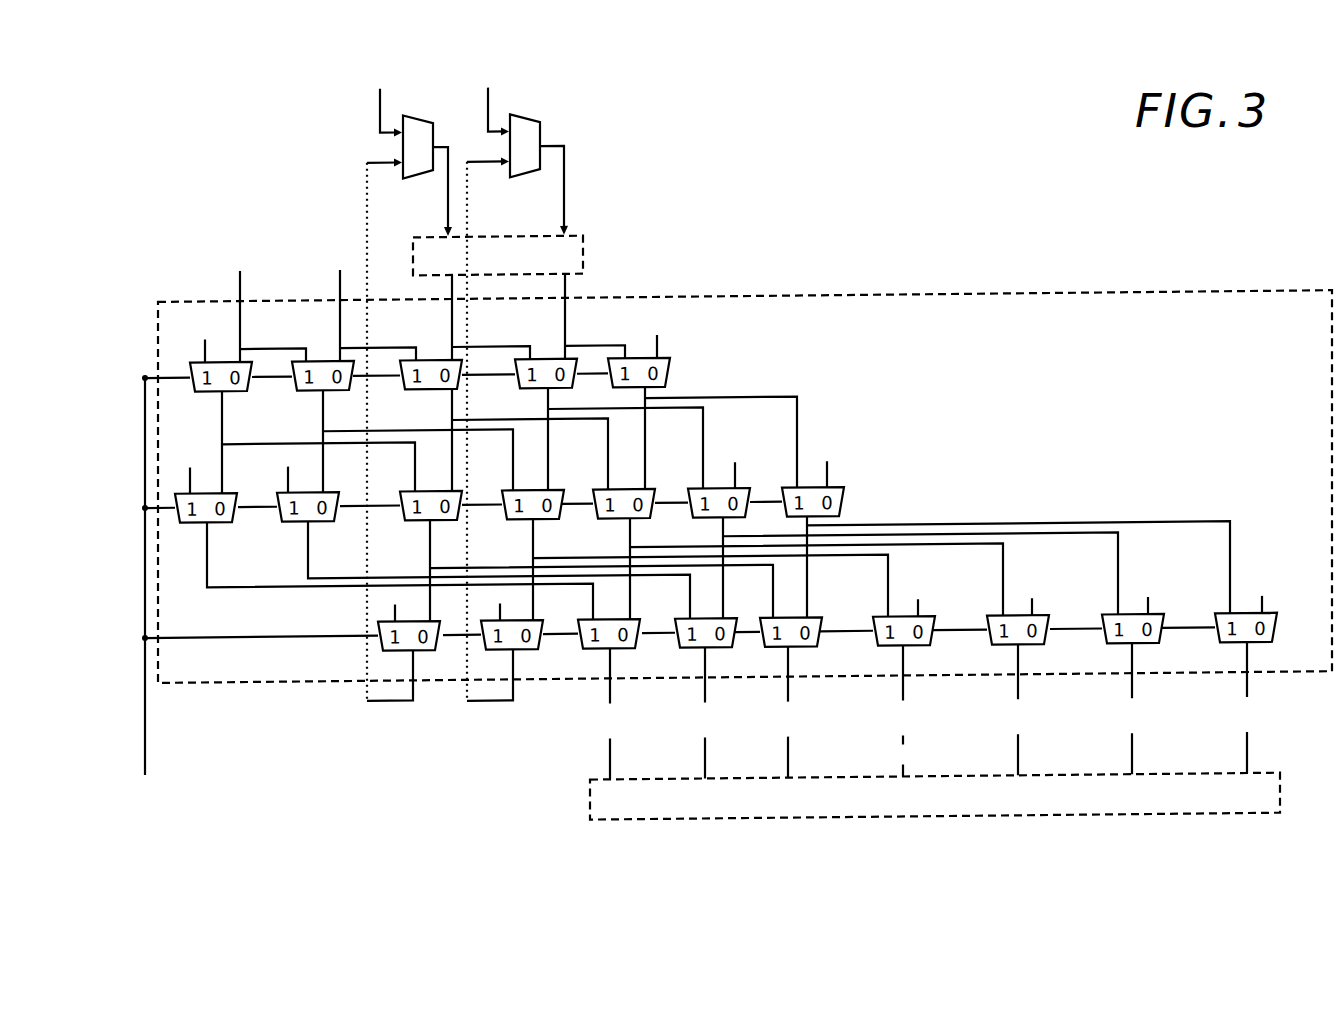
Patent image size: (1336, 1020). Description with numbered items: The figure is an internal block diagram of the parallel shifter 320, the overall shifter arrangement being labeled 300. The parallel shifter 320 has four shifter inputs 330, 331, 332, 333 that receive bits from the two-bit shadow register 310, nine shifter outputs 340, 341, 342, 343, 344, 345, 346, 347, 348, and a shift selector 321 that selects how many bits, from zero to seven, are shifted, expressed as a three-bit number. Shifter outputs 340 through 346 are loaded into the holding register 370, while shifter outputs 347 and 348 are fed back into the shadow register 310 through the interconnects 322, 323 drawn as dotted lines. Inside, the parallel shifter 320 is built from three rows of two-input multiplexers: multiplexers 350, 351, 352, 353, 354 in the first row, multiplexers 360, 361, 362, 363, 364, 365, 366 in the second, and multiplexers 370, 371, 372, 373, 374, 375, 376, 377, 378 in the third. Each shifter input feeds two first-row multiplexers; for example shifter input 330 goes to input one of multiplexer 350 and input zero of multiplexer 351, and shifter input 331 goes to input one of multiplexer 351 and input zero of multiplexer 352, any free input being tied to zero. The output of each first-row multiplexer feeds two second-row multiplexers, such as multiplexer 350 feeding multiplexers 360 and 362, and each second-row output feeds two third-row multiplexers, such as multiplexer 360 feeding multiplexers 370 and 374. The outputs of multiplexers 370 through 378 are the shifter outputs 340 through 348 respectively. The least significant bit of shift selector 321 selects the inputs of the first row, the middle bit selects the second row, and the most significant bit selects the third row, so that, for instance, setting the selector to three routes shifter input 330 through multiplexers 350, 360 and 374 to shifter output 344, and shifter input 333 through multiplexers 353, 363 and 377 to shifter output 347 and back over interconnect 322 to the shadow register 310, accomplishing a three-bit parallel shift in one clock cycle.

The shifter circuit 300 is at (252, 216).
The shadow register 310 is at (584, 260).
The parallel shifter 320 is at (912, 302).
The shift selector 321 is at (148, 712).
The interconnect 322 is at (478, 528).
The interconnect 323 is at (366, 602).
The shifter input 330 is at (565, 313).
The shifter input 331 is at (452, 313).
The shifter input 332 is at (340, 313).
The shifter input 333 is at (241, 283).
The shifter output 340 is at (1245, 690).
The shifter output 341 is at (1130, 689).
The shifter output 342 is at (1016, 688).
The shifter output 343 is at (901, 688).
The shifter output 344 is at (786, 687).
The shifter output 345 is at (703, 686).
The shifter output 346 is at (608, 687).
The shifter output 347 is at (502, 705).
The shifter output 348 is at (398, 704).
The two-input multiplexer 350 is at (672, 378).
The two-input multiplexer 351 is at (538, 392).
The two-input multiplexer 352 is at (433, 392).
The two-input multiplexer 353 is at (338, 392).
The two-input multiplexer 354 is at (232, 392).
The two-input multiplexer 360 is at (832, 493).
The two-input multiplexer 361 is at (742, 492).
The two-input multiplexer 362 is at (648, 492).
The two-input multiplexer 363 is at (553, 492).
The two-input multiplexer 364 is at (417, 523).
The two-input multiplexer 365 is at (296, 523).
The two-input multiplexer 366 is at (228, 494).
The holding register 370 is at (1278, 624).
The two-input multiplexer 371 is at (1164, 624).
The two-input multiplexer 372 is at (1048, 624).
The two-input multiplexer 373 is at (933, 624).
The two-input multiplexer 374 is at (814, 624).
The two-input multiplexer 375 is at (730, 624).
The two-input multiplexer 376 is at (634, 624).
The two-input multiplexer 377 is at (537, 624).
The two-input multiplexer 378 is at (440, 643).